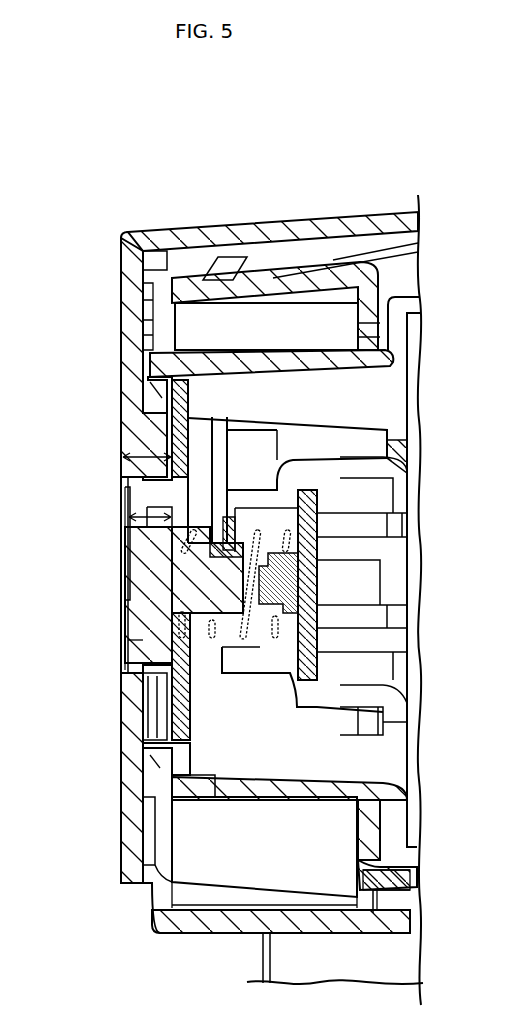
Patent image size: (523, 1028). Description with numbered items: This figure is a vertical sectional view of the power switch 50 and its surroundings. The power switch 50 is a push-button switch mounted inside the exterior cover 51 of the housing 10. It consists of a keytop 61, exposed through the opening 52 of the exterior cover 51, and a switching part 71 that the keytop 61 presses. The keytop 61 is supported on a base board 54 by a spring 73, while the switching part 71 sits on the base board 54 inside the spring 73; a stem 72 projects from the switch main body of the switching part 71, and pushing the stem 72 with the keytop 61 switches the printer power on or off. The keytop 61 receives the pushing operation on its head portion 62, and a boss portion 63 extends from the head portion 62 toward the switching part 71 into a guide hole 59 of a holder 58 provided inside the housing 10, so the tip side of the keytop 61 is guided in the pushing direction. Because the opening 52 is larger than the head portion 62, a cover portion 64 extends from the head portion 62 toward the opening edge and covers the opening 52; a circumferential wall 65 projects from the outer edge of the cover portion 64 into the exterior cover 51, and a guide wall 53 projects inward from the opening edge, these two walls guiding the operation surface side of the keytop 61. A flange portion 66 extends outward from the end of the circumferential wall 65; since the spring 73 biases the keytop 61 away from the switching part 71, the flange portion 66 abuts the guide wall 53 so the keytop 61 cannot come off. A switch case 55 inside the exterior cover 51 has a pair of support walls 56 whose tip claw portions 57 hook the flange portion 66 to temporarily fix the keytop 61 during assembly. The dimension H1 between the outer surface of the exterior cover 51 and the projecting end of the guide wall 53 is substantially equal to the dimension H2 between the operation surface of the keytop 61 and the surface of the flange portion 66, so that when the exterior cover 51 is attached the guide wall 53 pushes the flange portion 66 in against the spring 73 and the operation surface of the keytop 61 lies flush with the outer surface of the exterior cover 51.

The housing 10 is at (162, 231).
The power switch 50 is at (101, 471).
The exterior cover 51 is at (121, 333).
The opening 52 is at (128, 497).
The guide wall 53 is at (143, 717).
The base board 54 is at (310, 630).
The switch case 55 is at (272, 814).
The support walls 56 is at (270, 353).
The claw portions 57 is at (145, 405).
The holder 58 is at (215, 557).
The guide hole 59 is at (182, 557).
The keytop 61 is at (112, 596).
The head portion 62 is at (137, 597).
The boss portion 63 is at (210, 613).
The cover portion 64 is at (133, 645).
The circumferential wall 65 is at (133, 670).
The flange portion 66 is at (205, 780).
The switching part 71 is at (288, 578).
The stem 72 is at (258, 590).
The spring 73 is at (273, 475).
The dimension H1 is at (155, 456).
The dimension H2 is at (128, 530).